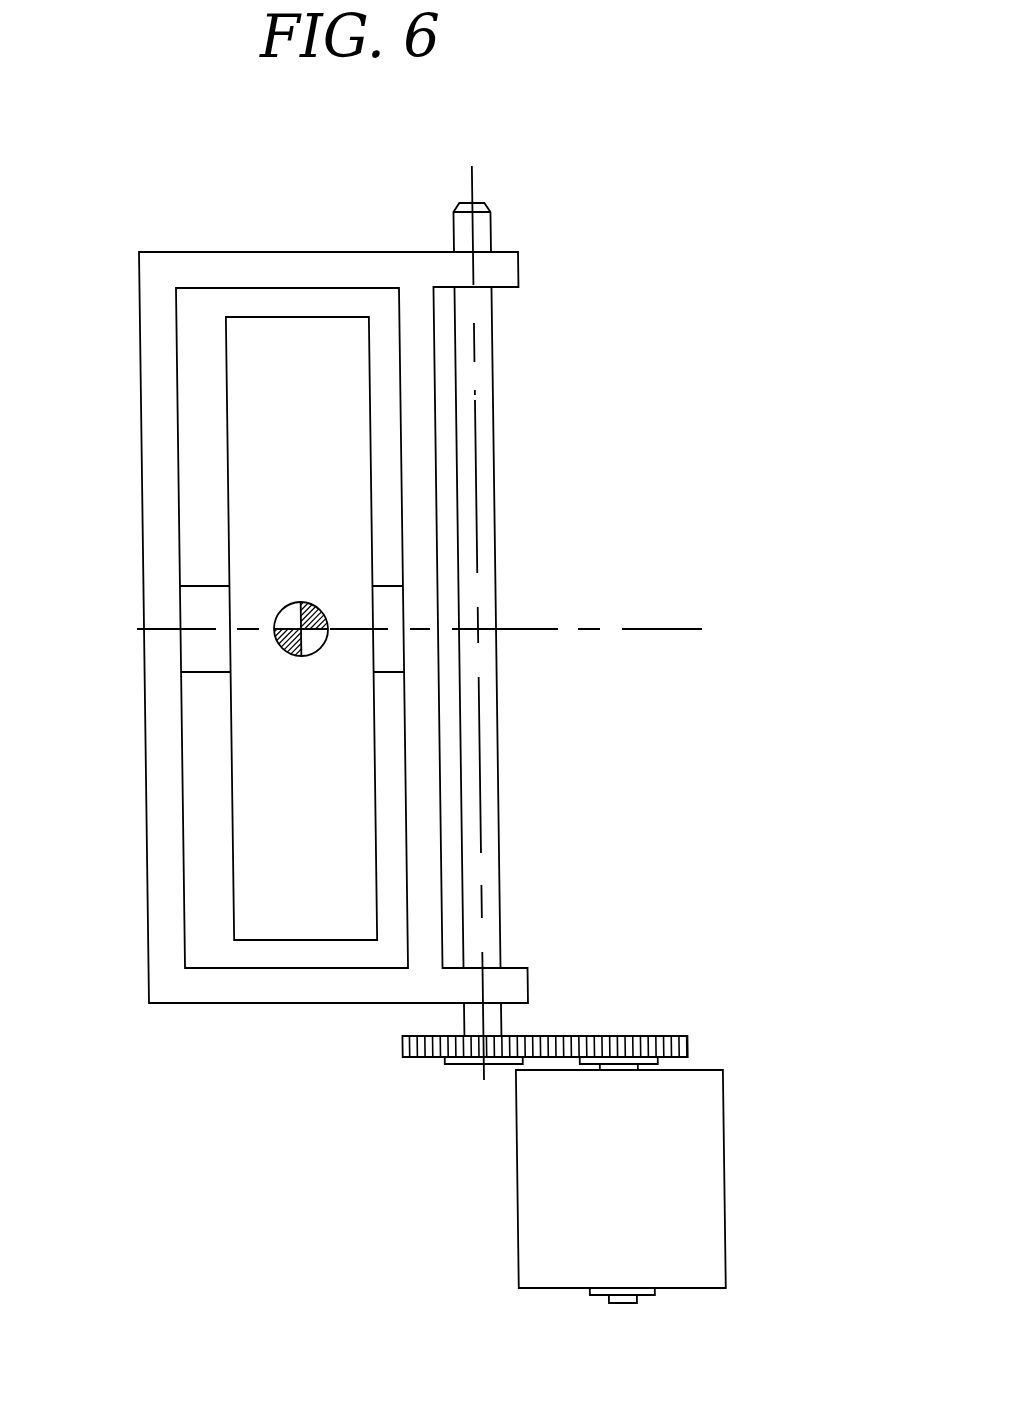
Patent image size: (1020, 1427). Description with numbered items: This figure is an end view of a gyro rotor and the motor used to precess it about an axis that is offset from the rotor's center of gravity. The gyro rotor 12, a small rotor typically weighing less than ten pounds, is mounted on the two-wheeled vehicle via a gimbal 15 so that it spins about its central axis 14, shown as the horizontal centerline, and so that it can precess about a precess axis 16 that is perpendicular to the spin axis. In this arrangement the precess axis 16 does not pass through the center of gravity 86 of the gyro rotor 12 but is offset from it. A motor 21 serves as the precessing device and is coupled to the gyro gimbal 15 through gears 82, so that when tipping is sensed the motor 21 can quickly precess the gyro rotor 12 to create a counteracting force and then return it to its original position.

The gyro rotor 12 is at (307, 420).
The central axis 14 is at (592, 627).
The gimbal 15 is at (167, 884).
The precess axis 16 is at (472, 183).
The motor 21 is at (705, 1215).
The gears 82 is at (442, 1048).
The center of gravity 86 is at (293, 655).